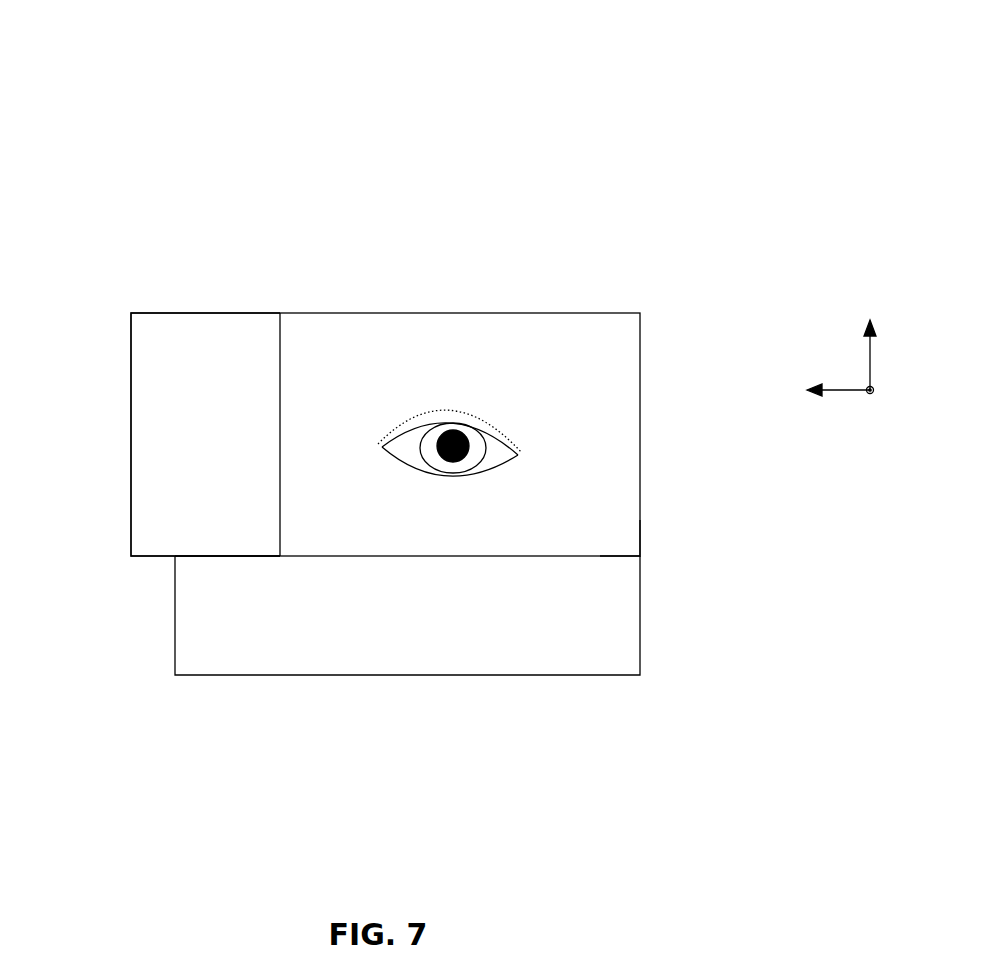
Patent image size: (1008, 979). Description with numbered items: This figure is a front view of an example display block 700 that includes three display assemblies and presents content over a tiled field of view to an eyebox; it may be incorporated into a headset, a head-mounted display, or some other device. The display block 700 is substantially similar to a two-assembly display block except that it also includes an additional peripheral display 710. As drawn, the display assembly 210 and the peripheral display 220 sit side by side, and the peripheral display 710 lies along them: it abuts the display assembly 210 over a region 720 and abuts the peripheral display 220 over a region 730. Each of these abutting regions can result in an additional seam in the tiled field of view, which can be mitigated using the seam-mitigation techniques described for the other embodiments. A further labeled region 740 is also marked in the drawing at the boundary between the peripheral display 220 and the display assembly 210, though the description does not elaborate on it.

The display block 700 is at (77, 38).
The display assembly 210 is at (610, 327).
The peripheral display 220 is at (143, 364).
The peripheral display 710 is at (610, 622).
The region 720 is at (630, 562).
The region 730 is at (242, 568).
The region 740 is at (288, 382).